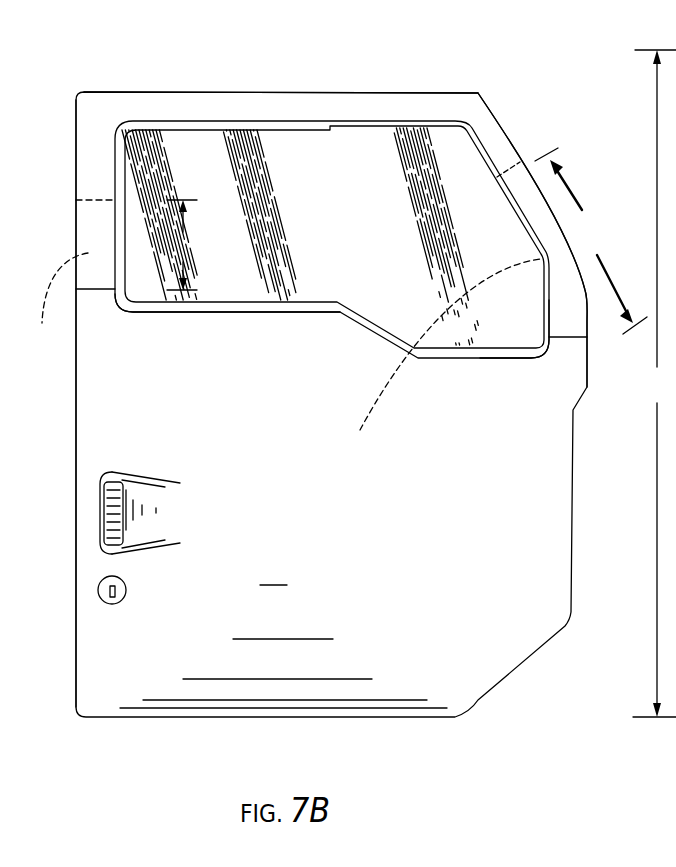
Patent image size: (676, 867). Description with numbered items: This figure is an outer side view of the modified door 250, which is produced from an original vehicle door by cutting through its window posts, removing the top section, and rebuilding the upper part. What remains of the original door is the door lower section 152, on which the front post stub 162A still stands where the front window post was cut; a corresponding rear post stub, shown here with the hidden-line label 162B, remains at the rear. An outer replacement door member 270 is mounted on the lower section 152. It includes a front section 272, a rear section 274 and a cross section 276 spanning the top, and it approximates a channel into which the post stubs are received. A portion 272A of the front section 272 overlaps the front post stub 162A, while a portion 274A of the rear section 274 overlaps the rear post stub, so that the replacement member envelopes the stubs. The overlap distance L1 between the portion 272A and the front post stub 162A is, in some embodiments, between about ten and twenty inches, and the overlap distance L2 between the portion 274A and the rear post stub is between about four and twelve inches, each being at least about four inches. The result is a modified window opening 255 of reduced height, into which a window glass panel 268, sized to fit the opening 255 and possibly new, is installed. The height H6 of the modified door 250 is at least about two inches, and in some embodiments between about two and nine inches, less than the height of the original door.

The modified door 250 is at (566, 86).
The door lower section 152 is at (102, 642).
The outer replacement door member 270 is at (303, 84).
The front section 272 is at (497, 123).
The overlapping portion of front section 272A is at (548, 301).
The rear section 274 is at (76, 137).
The overlapping portion of rear section 274A is at (94, 233).
The cross section 276 is at (230, 92).
The window glass panel 268 is at (331, 283).
The modified window opening 255 is at (240, 318).
The front post stub 162A is at (425, 304).
The hidden hinge 162B is at (55, 304).
The overlap distance L1 is at (591, 241).
The overlap distance L2 is at (182, 245).
The height of the modified door H6 is at (654, 383).